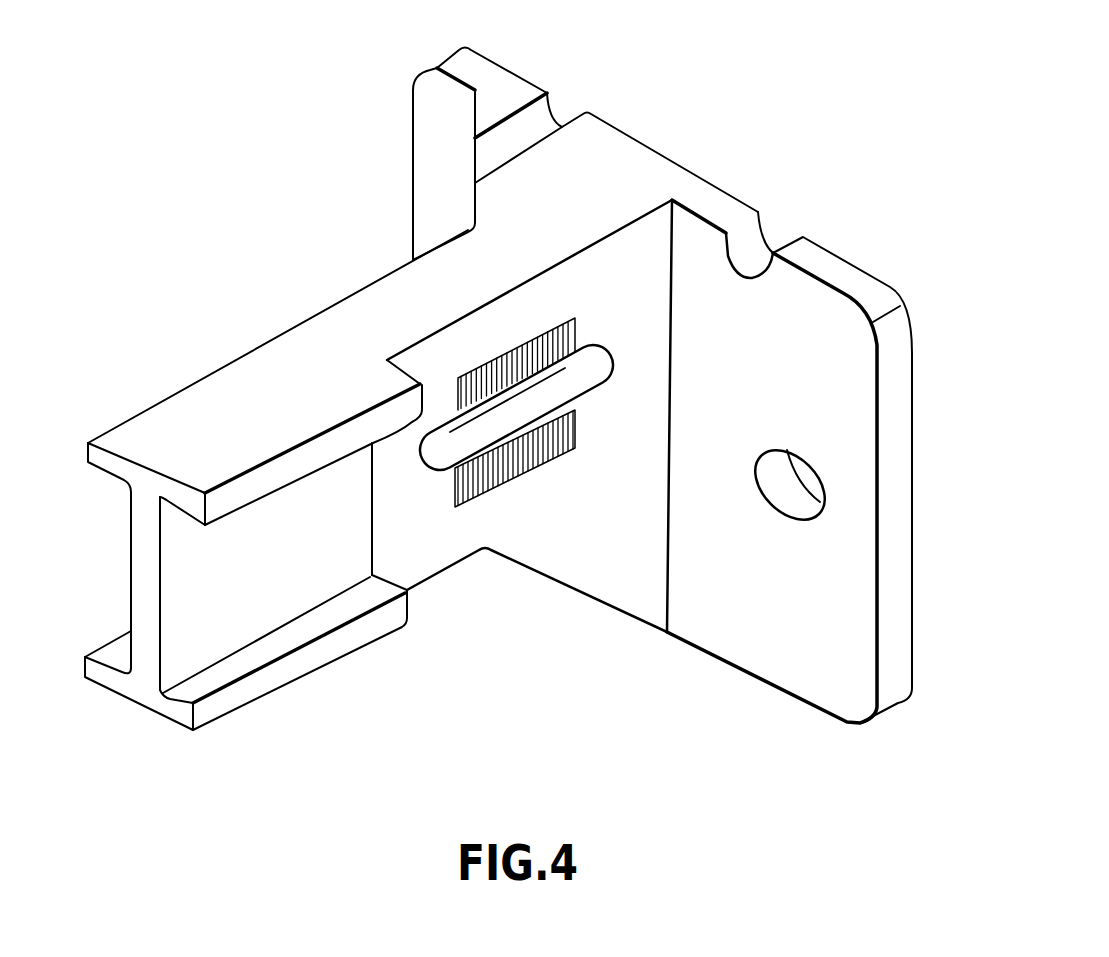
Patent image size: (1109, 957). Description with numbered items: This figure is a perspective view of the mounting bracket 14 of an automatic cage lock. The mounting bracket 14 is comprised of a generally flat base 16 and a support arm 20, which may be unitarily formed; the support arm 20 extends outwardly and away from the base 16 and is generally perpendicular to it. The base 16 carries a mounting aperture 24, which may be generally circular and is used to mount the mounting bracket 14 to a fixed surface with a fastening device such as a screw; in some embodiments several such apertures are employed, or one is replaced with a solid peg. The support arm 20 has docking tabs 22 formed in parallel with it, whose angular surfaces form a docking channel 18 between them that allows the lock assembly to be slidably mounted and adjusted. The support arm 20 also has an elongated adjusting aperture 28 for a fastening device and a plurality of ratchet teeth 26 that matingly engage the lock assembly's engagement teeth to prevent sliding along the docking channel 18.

The mounting bracket 14 is at (522, 391).
The base 16 is at (813, 461).
The docking channel 18 is at (183, 623).
The support arm 20 is at (225, 407).
The docking tab 22 is at (342, 443).
The mounting aperture 24 is at (807, 477).
The ratchet teeth 26 is at (517, 477).
The adjusting aperture 28 is at (510, 425).